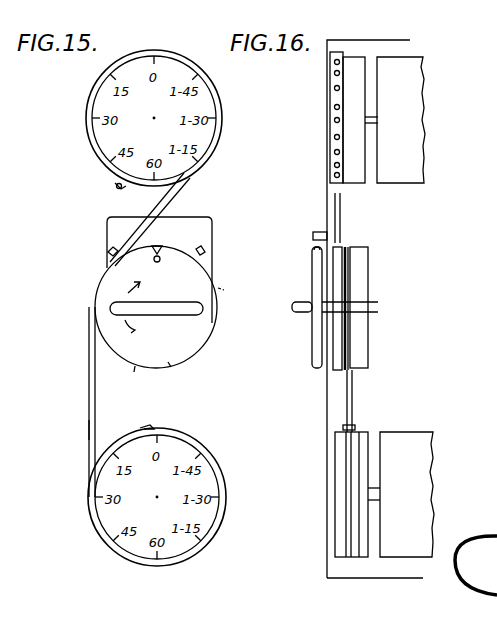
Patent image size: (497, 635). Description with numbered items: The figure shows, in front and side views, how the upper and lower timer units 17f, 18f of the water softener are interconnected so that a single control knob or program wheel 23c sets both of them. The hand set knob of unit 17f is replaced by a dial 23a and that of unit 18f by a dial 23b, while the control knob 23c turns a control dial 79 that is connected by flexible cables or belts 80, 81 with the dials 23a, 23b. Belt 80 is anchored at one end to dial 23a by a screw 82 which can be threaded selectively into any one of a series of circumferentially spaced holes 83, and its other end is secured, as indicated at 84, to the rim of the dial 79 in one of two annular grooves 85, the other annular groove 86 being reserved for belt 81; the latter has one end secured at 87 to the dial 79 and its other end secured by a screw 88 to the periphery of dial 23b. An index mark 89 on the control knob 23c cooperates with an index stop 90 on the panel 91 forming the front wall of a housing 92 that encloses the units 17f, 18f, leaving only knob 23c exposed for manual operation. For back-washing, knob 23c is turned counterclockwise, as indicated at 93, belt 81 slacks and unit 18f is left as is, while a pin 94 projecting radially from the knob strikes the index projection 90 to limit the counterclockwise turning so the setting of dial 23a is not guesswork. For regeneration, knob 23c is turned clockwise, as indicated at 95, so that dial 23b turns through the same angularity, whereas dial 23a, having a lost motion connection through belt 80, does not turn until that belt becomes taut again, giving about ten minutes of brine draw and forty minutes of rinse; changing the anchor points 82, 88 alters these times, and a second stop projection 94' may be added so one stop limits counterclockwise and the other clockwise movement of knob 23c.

In FIG. 15, the belt 80 is at (176, 190).
In FIG. 16, the belt 80 is at (338, 52).
In FIG. 15, the belt 81 is at (92, 428).
In FIG. 16, the belt 81 is at (353, 399).
In FIG. 15, the screw 82 is at (117, 189).
In FIG. 16, the circumferentially spaced holes 83 is at (333, 164).
In FIG. 15, the belt securing point 84 is at (111, 251).
In FIG. 16, the annular groove 85 is at (341, 372).
In FIG. 16, the annular groove 86 is at (352, 335).
In FIG. 15, the belt securing point 87 is at (171, 367).
In FIG. 15, the screw 88 is at (140, 428).
In FIG. 16, the screw 88 is at (343, 427).
In FIG. 15, the index mark 89 is at (130, 278).
In FIG. 15, the index stop 90 is at (163, 246).
In FIG. 16, the index stop 90 is at (313, 236).
In FIG. 15, the panel 91 is at (212, 240).
In FIG. 16, the panel 91 is at (327, 205).
In FIG. 16, the housing 92 is at (361, 579).
In FIG. 15, the counterclockwise turning direction 93 is at (195, 333).
In FIG. 15, the pin 94 is at (229, 251).
In FIG. 16, the pin 94 is at (301, 262).
In FIG. 15, the stop projection 94' is at (243, 290).
In FIG. 15, the clockwise turning direction 95 is at (185, 282).
In FIG. 15, the control dial 79 is at (135, 372).
In FIG. 16, the control dial 79 is at (365, 361).
In FIG. 15, the dial 23a is at (203, 130).
In FIG. 16, the dial 23a is at (357, 184).
In FIG. 15, the dial 23b is at (205, 518).
In FIG. 16, the dial 23b is at (365, 546).
In FIG. 15, the control knob 23c is at (214, 334).
In FIG. 16, the control knob 23c is at (312, 344).
In FIG. 16, the unit 17f is at (411, 184).
In FIG. 16, the unit 18f is at (405, 432).